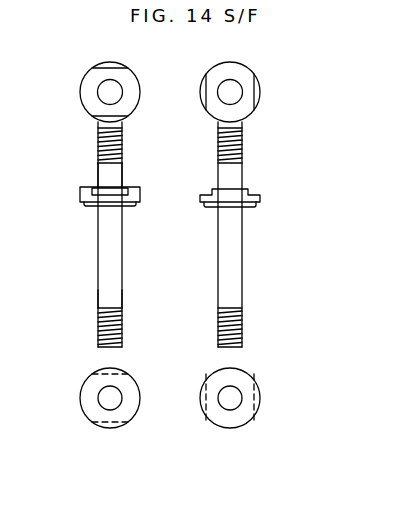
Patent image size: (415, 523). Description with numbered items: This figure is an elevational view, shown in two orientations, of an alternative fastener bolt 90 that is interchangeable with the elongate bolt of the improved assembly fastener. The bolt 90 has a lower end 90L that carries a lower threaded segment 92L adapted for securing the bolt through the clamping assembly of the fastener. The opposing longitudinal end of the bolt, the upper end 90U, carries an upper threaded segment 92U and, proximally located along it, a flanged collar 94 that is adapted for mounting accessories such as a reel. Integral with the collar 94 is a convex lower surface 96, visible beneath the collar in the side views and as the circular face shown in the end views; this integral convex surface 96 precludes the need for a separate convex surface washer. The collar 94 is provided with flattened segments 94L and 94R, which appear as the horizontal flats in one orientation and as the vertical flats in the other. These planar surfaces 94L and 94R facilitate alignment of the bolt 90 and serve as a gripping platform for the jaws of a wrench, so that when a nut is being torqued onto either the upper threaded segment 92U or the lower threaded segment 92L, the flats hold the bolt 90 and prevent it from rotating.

The bolt 90 is at (98, 101).
The upper longitudinal end of bolt 90U is at (97, 171).
The lower end of bolt 90L is at (97, 310).
The upper threaded segment 92U is at (123, 163).
The lower threaded segment 92L is at (123, 338).
The flanged collar 94 is at (82, 83).
The left flattened segment of collar 94L is at (205, 98).
The right flattened segment of collar 94R is at (256, 104).
The convex lower surface 96 is at (95, 208).